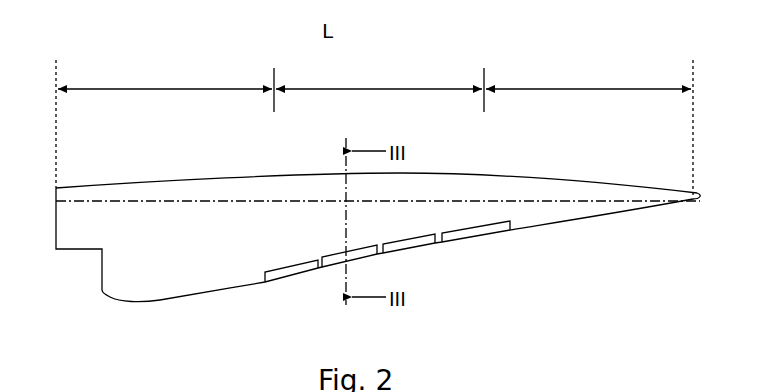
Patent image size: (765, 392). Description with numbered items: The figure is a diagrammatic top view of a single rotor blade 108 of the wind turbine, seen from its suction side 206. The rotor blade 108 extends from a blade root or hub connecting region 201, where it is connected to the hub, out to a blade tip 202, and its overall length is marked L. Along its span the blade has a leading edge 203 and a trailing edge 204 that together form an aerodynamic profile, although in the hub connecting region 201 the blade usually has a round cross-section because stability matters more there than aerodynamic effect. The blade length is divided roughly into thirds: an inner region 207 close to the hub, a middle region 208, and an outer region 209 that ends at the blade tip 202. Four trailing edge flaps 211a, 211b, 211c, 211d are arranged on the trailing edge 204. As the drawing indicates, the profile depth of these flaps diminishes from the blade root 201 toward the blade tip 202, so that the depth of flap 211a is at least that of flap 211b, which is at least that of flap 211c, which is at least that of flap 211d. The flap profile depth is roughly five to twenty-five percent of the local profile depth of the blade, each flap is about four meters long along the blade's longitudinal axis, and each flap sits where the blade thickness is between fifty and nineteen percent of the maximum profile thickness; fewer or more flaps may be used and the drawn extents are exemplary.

The rotor blade 108 is at (390, 253).
The hub connecting region 201 is at (72, 252).
The blade tip 202 is at (700, 195).
The leading edge 203 is at (222, 177).
The trailing edge 204 is at (552, 228).
The suction side 206 is at (228, 249).
The inner region 207 is at (135, 89).
The middle region 208 is at (408, 89).
The outer region 209 is at (590, 89).
The trailing edge flap 211a is at (290, 283).
The trailing edge flap 211b is at (362, 248).
The trailing edge flap 211c is at (417, 246).
The trailing edge flap 211d is at (490, 233).